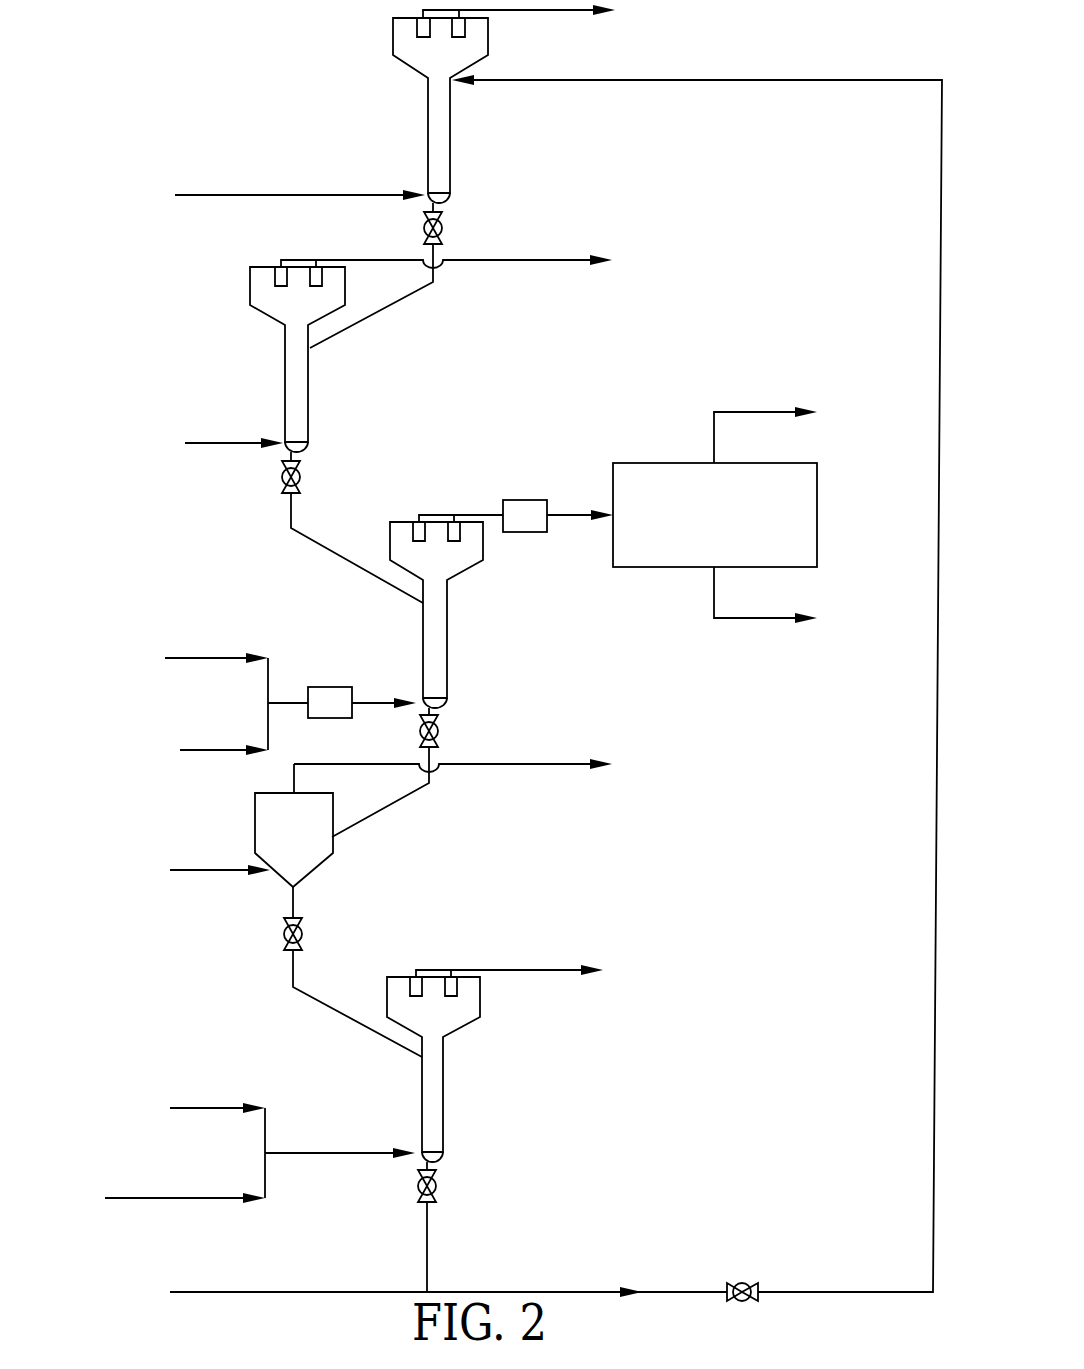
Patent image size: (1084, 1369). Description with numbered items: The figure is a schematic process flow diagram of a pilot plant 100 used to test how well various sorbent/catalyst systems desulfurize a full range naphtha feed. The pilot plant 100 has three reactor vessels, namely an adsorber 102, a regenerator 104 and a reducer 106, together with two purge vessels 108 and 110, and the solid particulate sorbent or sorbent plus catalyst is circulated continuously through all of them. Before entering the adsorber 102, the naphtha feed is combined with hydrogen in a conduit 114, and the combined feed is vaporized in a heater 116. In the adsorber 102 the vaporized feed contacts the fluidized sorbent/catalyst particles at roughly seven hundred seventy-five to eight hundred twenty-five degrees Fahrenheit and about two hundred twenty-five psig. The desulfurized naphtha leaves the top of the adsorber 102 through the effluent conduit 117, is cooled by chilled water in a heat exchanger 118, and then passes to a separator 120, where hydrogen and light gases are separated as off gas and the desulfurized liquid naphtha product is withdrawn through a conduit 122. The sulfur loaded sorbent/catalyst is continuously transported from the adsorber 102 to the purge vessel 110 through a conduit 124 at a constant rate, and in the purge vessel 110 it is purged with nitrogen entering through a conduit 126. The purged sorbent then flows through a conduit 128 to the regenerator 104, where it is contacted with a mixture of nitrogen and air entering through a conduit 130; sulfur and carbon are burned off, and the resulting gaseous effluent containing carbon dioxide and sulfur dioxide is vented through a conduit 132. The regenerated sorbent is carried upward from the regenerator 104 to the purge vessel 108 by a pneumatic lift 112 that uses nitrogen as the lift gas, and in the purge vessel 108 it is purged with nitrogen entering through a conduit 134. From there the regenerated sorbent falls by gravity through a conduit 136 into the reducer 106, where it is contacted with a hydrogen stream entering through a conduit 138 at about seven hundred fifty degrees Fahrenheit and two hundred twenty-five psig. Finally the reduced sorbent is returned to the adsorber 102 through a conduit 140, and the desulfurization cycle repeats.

The pilot plant 100 is at (184, 110).
The adsorber 102 is at (447, 665).
The regenerator 104 is at (443, 1120).
The reducer 106 is at (308, 402).
The purge vessel 108 is at (450, 161).
The purge vessel 110 is at (313, 870).
The pneumatic lift 112 is at (934, 1118).
The conduit 114 is at (288, 703).
The heater 116 is at (336, 687).
The adsorber effluent line 117 is at (477, 515).
The heat exchanger 118 is at (521, 500).
The separator 120 is at (817, 515).
The conduit 122 is at (714, 593).
The conduit 124 is at (383, 810).
The conduit 126 is at (212, 870).
The conduit 128 is at (353, 1025).
The conduit 130 is at (353, 1153).
The conduit 132 is at (517, 970).
The conduit 134 is at (226, 195).
The conduit 136 is at (373, 318).
The conduit 138 is at (214, 444).
The conduit 140 is at (353, 566).